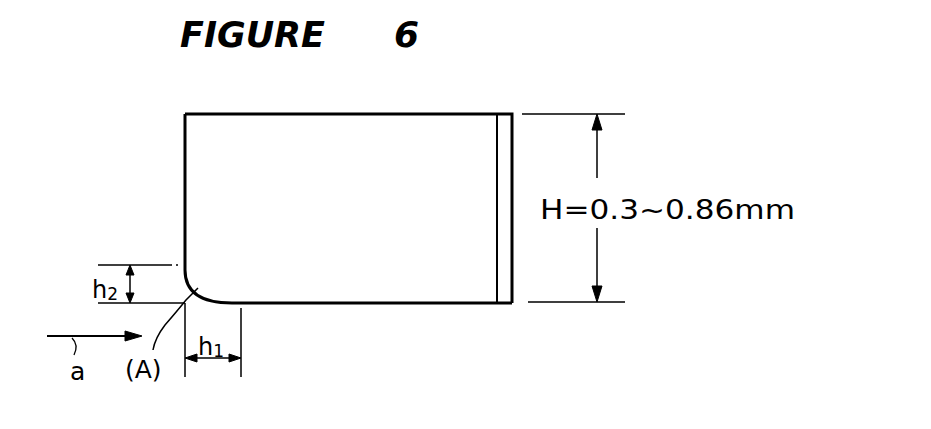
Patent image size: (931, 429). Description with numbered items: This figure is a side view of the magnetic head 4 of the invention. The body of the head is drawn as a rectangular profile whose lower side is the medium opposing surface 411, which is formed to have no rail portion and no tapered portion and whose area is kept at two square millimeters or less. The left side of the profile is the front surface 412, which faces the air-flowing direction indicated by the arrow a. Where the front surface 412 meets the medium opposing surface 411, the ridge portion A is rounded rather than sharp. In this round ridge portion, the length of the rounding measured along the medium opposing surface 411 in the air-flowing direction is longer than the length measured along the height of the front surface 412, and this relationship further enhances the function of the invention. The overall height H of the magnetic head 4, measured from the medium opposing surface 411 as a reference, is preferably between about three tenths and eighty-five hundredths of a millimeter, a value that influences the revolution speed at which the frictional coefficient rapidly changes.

The magnetic head 4 is at (452, 278).
The medium opposing surface 411 is at (315, 303).
The front surface 412 is at (185, 172).